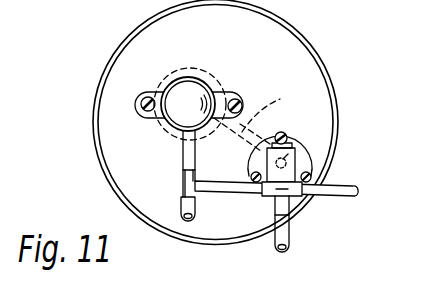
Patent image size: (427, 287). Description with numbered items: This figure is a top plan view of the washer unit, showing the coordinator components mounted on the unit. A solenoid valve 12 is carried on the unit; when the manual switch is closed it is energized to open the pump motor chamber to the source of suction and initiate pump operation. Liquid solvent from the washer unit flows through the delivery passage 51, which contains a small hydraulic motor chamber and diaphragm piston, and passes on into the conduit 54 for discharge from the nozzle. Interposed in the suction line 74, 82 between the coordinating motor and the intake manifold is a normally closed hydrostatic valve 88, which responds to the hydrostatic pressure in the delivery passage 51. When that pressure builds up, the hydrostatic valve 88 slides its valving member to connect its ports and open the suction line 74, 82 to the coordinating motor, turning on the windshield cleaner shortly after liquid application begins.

The solenoid valve 12 is at (180, 108).
The delivery passage 51 is at (280, 99).
The suction line 74 is at (192, 180).
The conduit 82 is at (337, 189).
The hydrostatic valve 88 is at (302, 149).
The conduit 54 is at (290, 243).